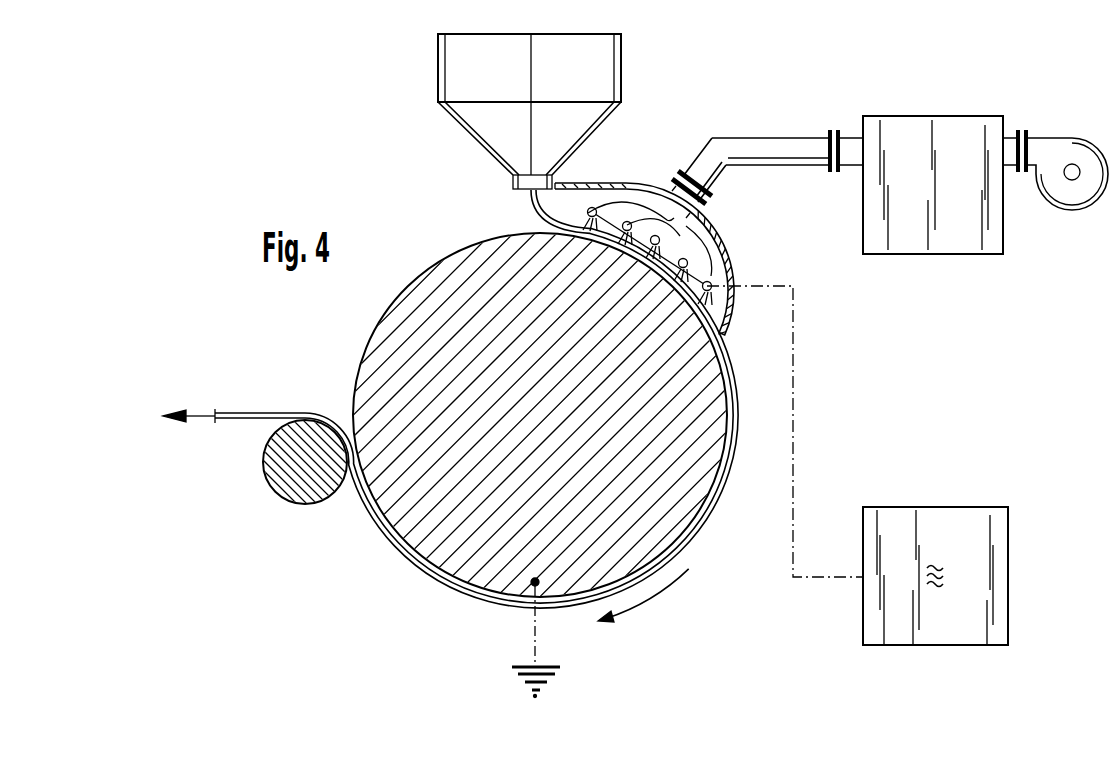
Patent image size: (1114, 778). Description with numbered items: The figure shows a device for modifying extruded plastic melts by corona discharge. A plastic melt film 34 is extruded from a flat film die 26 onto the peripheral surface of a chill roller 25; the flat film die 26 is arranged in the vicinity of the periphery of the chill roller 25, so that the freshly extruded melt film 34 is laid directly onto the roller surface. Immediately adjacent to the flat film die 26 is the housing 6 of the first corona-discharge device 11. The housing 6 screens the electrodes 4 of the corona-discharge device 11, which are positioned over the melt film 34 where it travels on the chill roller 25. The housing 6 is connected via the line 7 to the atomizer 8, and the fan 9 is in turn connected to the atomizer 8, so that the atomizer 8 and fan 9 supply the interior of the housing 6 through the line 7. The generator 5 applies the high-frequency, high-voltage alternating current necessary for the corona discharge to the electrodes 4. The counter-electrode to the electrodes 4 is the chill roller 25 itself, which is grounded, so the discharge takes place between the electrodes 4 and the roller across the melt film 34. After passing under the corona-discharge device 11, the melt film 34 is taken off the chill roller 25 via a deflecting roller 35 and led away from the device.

The electrodes 4 is at (682, 258).
The generator 5 is at (872, 603).
The housing 6 is at (636, 183).
The line 7 is at (767, 150).
The atomizer 8 is at (950, 238).
The fan 9 is at (1077, 193).
The first corona-discharge device 11 is at (589, 177).
The chill roller 25 is at (433, 542).
The flat film die 26 is at (492, 146).
The plastic melt film 34 is at (537, 212).
The deflecting roller 35 is at (313, 488).